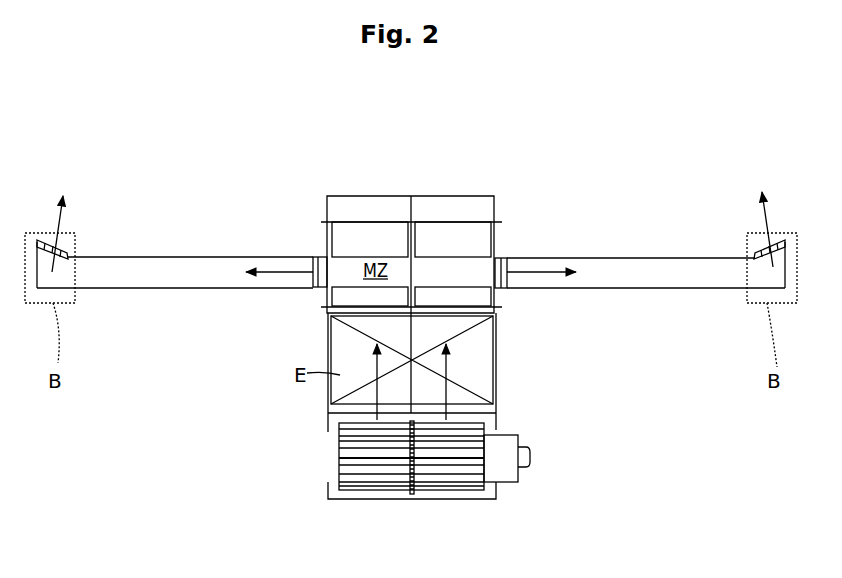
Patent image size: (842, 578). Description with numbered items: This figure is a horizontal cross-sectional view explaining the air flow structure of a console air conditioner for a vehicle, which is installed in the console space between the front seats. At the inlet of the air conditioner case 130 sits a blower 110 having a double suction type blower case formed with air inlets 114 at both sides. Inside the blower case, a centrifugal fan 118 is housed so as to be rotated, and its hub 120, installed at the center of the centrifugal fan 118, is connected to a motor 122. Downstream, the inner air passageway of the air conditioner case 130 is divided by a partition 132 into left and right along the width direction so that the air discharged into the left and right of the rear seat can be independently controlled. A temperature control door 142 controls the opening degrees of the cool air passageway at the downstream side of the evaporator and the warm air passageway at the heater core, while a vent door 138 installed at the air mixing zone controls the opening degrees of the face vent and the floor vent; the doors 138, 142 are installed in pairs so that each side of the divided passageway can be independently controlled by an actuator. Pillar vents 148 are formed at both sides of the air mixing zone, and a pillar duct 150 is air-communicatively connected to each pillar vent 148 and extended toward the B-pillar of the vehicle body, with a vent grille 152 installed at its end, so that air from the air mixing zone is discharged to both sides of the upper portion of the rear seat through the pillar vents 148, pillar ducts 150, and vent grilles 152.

The blower 110 is at (324, 488).
The air inlets 114 is at (328, 452).
The centrifugal fan 118 is at (383, 478).
The hub 120 is at (414, 477).
The motor 122 is at (508, 475).
The air conditioner case 130 is at (499, 379).
The partition 132 is at (412, 208).
The vent door 138 is at (337, 237).
The temperature control door 142 is at (329, 294).
The pillar vents 148 is at (313, 289).
The pillar duct 150 is at (148, 275).
The vent grille 152 is at (70, 240).